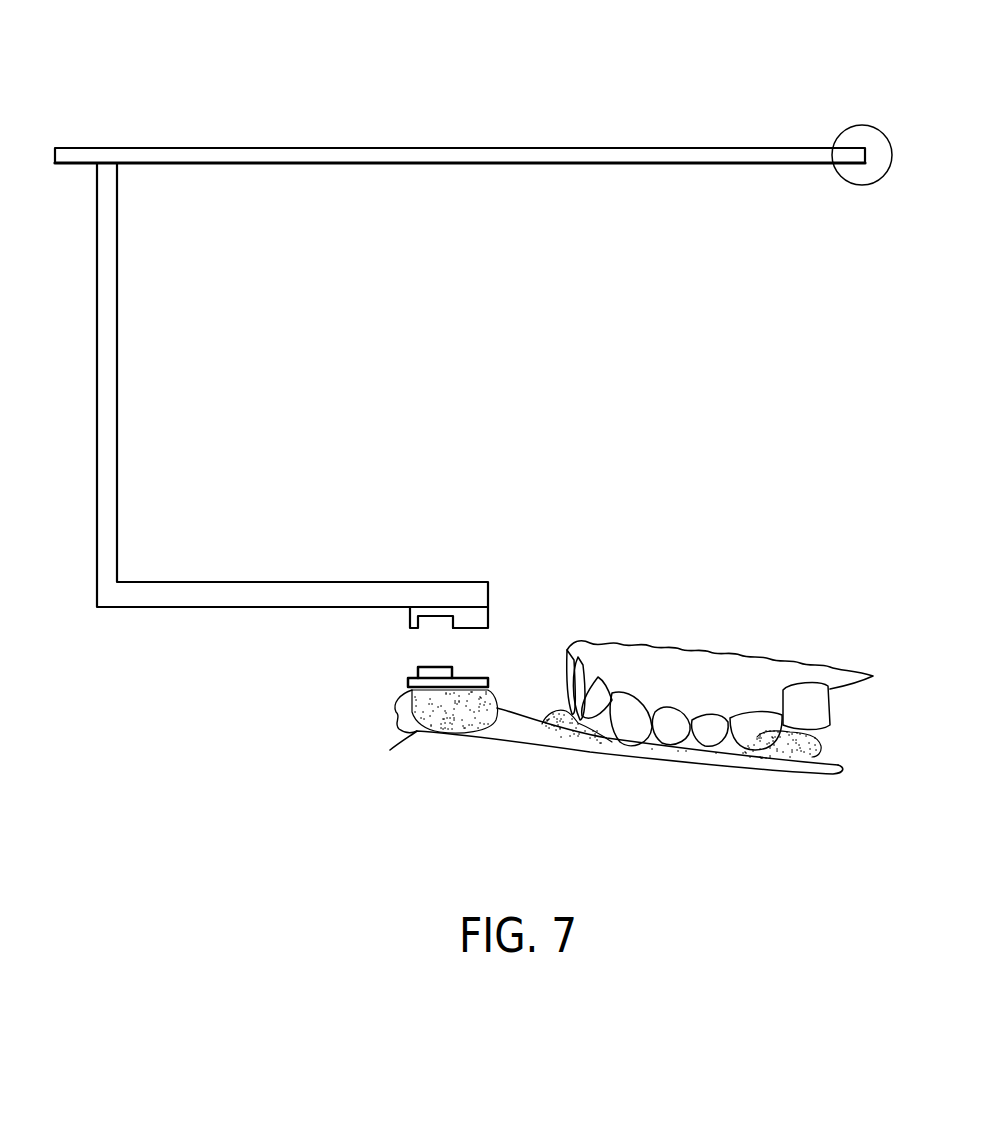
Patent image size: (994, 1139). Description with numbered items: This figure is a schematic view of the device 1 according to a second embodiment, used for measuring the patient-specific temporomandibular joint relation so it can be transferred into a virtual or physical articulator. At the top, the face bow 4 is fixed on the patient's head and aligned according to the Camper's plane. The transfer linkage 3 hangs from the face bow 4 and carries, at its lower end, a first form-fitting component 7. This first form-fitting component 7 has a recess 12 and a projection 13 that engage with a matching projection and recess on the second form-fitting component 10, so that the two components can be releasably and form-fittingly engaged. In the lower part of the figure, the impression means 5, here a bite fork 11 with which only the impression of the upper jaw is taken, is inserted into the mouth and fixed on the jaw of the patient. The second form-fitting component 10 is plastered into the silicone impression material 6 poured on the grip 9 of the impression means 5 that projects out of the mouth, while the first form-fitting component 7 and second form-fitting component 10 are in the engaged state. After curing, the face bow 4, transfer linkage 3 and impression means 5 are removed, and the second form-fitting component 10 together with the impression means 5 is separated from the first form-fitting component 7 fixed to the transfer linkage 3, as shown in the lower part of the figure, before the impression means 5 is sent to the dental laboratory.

The device 1 is at (701, 90).
The face bow 4 is at (548, 166).
The transfer linkage 3 is at (121, 447).
The first form-fitting component 7 is at (478, 571).
The recess 12 is at (433, 613).
The projection 13 is at (466, 626).
The second form-fitting component 10 is at (417, 655).
The impression material 6 is at (408, 698).
The grip 9 is at (418, 728).
The impression means 5 is at (631, 745).
The bite fork 11 is at (790, 775).